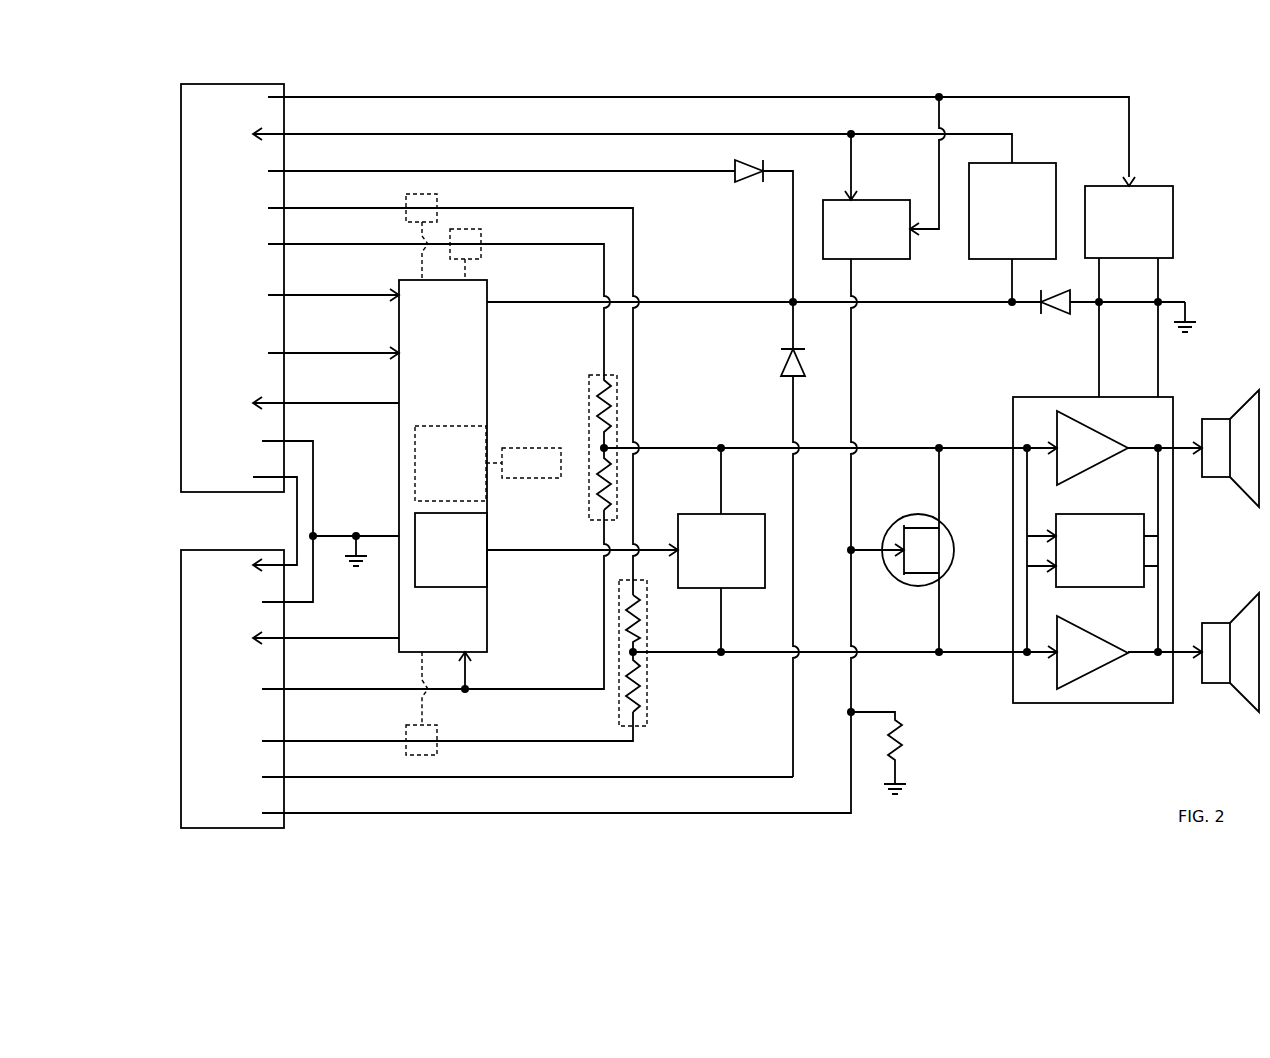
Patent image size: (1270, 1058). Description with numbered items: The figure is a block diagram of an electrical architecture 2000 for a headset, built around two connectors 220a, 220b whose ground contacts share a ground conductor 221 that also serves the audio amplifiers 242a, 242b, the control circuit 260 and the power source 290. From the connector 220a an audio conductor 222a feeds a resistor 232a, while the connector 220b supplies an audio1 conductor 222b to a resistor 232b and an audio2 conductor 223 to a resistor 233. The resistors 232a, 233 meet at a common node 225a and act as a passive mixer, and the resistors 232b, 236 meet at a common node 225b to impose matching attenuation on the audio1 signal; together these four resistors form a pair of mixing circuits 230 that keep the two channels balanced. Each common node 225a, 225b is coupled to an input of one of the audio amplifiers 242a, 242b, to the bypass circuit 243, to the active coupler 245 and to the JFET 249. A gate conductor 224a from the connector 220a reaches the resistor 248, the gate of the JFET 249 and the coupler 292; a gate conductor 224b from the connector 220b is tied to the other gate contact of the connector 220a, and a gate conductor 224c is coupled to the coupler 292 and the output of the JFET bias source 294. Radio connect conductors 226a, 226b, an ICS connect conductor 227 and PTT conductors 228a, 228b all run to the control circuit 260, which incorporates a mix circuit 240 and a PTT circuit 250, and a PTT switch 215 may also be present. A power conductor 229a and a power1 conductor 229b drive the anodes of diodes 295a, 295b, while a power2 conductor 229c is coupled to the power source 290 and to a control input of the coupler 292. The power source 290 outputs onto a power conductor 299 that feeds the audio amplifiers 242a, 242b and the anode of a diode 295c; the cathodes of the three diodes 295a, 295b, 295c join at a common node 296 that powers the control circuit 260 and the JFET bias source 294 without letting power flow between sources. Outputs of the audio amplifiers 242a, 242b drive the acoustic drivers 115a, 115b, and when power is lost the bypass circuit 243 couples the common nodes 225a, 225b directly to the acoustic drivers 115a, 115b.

The electrical architecture 2000 is at (1168, 109).
The connector 220a is at (277, 550).
The connector 220b is at (187, 493).
The ground conductor 221 is at (383, 533).
The audio conductor 222a is at (313, 739).
The audio1 conductor 222b is at (312, 247).
The audio2 conductor 223 is at (312, 211).
The gate conductor 224a is at (313, 811).
The gate conductor 224b is at (300, 492).
The gate conductor 224c is at (312, 137).
The common node 225a is at (896, 656).
The common node 225b is at (896, 448).
The radio connect conductor 226a is at (313, 687).
The radio connect conductor 226b is at (312, 298).
The ICS connect conductor 227 is at (312, 356).
The PTT conductor 228a is at (313, 636).
The PTT conductor 228b is at (312, 406).
The power conductor 229a is at (313, 775).
The power1 conductor 229b is at (312, 174).
The power2 conductor 229c is at (312, 100).
The mixing circuits 230 is at (598, 375).
The resistor 232a is at (641, 700).
The resistor 232b is at (598, 398).
The resistor 233 is at (645, 599).
The resistor 236 is at (598, 505).
The mix circuit 240 is at (451, 550).
The audio amplifier 242a is at (1092, 652).
The audio amplifier 242b is at (1092, 448).
The bypass circuit 243 is at (1092, 550).
The active coupler 245 is at (626, 550).
The resistor 248 is at (903, 757).
The JFET 249 is at (900, 550).
The PTT circuit 250 is at (450, 463).
The PTT switch 215 is at (523, 463).
The control circuit 260 is at (443, 474).
The power source 290 is at (1129, 291).
The coupler 292 is at (884, 178).
The JFET bias source 294 is at (1012, 232).
The diode 295a is at (780, 361).
The diode 295b is at (750, 183).
The diode 295c is at (1055, 315).
The common node 296 is at (686, 302).
The power conductor 299 is at (1099, 382).
The acoustic driver 115a is at (1230, 652).
The acoustic driver 115b is at (1230, 448).